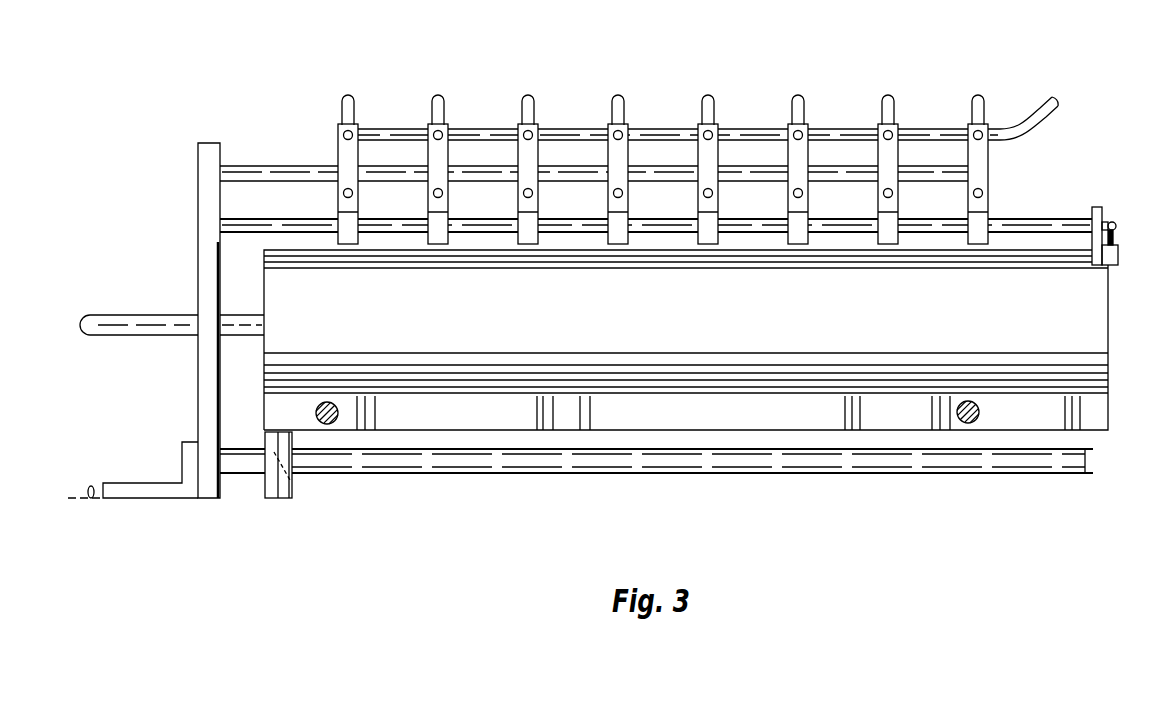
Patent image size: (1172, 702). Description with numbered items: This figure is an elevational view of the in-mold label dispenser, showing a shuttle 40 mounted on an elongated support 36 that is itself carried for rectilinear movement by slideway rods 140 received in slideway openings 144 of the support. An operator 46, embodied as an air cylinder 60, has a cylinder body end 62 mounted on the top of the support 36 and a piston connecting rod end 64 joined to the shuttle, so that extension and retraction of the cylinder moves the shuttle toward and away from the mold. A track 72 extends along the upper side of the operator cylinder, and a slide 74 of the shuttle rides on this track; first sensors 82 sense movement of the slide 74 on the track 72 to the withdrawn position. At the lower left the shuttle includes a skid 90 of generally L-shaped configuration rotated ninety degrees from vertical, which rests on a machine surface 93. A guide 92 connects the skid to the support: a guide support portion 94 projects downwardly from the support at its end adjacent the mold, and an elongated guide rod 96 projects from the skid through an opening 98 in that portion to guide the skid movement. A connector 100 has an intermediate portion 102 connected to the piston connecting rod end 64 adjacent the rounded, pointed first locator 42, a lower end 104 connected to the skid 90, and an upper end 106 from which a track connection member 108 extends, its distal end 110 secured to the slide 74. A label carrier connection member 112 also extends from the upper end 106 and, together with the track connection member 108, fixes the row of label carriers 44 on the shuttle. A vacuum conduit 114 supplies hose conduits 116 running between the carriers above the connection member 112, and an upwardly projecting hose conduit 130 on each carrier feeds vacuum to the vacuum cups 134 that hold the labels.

The support 36 is at (652, 412).
The shuttle 40 is at (253, 160).
The first locator 42 is at (93, 316).
The label carriers 44 is at (354, 200).
The operator 46 is at (498, 400).
The air cylinder 60 is at (703, 328).
The cylinder body end 62 is at (1030, 372).
The piston connecting rod end 64 is at (222, 312).
The track 72 is at (1032, 260).
The slide 74 is at (1093, 207).
The first sensors 82 is at (1121, 229).
The skid 90 is at (180, 500).
The guide 92 is at (254, 488).
The machine surface 93 is at (93, 504).
The guide support portion 94 is at (285, 463).
The guide rod 96 is at (373, 474).
The opening 98 is at (293, 477).
The connector 100 is at (195, 232).
The intermediate portion 102 is at (208, 330).
The lower end 104 is at (204, 432).
The upper end 106 is at (203, 198).
The track connection member 108 is at (292, 219).
The distal end 110 is at (1030, 219).
The label carrier connection member 112 is at (318, 166).
The vacuum conduit 114 is at (1024, 102).
The hose conduits 116 is at (376, 129).
The hose conduit 130 is at (347, 95).
The vacuum cups 134 is at (351, 139).
The slideway rod 140 is at (333, 406).
The slideway opening 144 is at (322, 405).